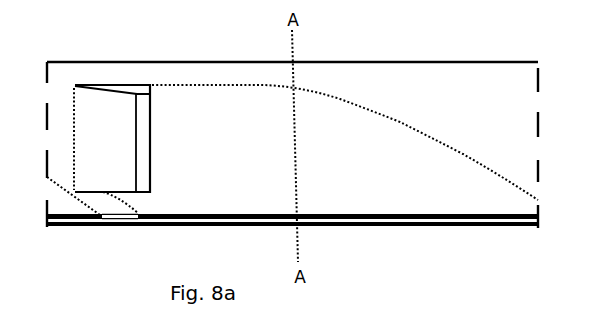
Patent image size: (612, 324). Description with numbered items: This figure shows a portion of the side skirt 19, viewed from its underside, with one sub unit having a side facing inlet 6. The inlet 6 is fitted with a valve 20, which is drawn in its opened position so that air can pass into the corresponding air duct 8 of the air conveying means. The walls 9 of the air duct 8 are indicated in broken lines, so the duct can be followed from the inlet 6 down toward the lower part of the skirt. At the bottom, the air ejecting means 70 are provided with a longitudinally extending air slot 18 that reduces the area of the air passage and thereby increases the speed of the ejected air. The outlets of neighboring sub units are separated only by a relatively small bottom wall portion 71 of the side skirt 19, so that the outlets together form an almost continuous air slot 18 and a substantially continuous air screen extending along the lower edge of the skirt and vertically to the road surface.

The side facing inlet 6 is at (106, 161).
The air duct 8 is at (231, 139).
The walls of the air duct 9 is at (400, 123).
The air slot 18 is at (453, 222).
The side skirt 19 is at (506, 97).
The valve 20 is at (116, 94).
The air ejecting means 70 is at (173, 227).
The bottom wall portion 71 is at (140, 216).